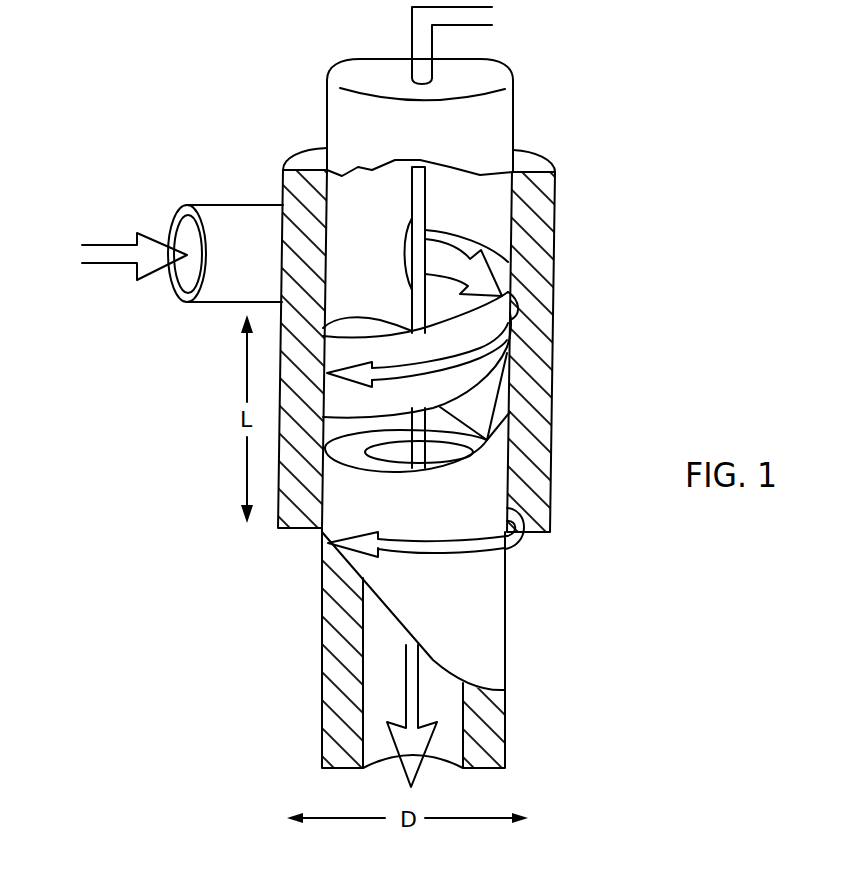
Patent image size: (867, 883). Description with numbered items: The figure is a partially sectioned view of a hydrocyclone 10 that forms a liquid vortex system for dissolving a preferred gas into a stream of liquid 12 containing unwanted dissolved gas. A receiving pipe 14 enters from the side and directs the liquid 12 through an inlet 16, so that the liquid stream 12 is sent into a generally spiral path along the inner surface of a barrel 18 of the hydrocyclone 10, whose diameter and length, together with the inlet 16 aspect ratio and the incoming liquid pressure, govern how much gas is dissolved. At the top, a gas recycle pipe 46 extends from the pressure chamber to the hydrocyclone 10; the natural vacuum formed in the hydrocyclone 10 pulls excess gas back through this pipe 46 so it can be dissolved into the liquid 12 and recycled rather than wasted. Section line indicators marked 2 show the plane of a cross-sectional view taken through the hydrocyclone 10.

The hydrocyclone 10 is at (250, 160).
The liquid stream 12 is at (120, 265).
The receiving pipe 14 is at (217, 298).
The inlet 16 is at (405, 215).
The barrel 18 is at (285, 527).
The gas recycle pipe 46 is at (462, 26).
The section line 2- 2 is at (173, 155).